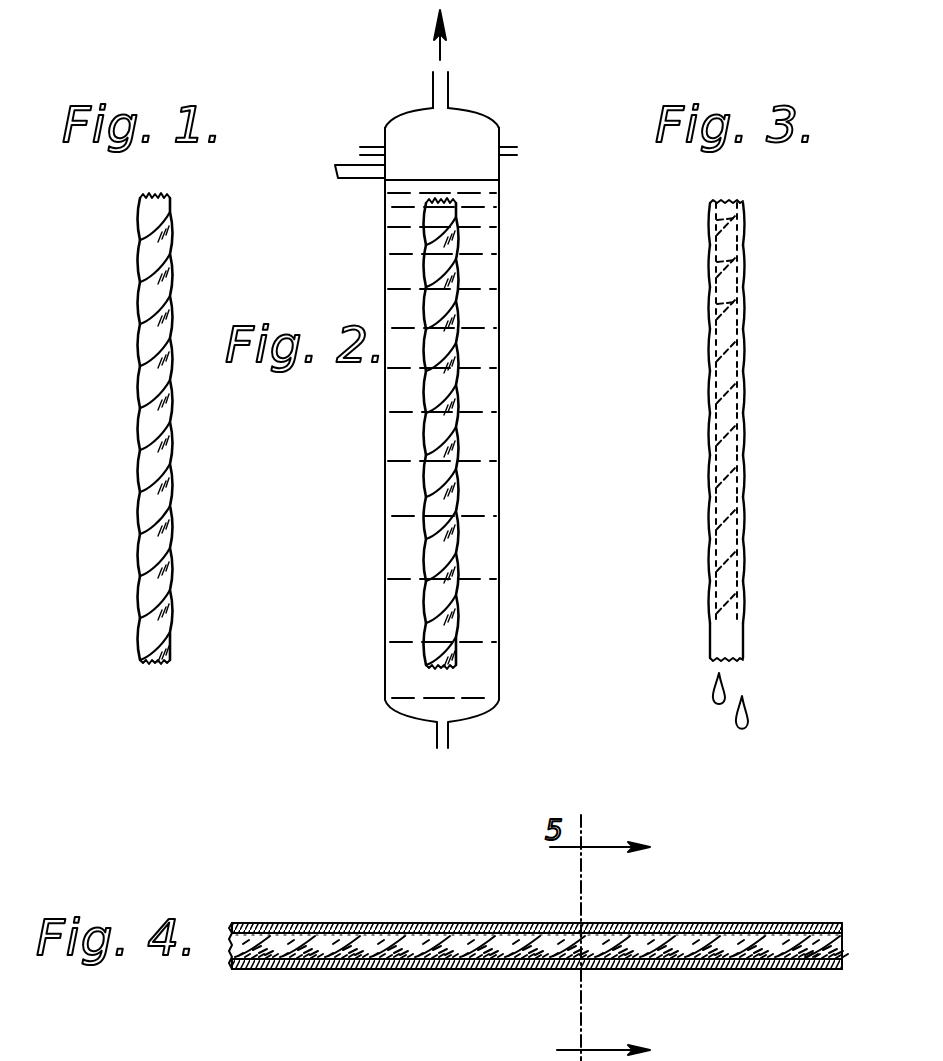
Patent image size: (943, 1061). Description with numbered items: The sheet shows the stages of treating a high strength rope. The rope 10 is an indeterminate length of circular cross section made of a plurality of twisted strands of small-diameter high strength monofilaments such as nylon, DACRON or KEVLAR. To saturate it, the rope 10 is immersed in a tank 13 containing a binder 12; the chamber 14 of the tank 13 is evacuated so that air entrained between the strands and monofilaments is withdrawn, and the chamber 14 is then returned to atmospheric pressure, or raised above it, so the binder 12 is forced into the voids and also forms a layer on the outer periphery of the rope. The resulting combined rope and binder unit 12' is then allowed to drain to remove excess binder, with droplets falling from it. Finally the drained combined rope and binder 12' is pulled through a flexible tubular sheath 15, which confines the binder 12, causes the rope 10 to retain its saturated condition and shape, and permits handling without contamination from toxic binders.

In FIG. 1, the rope 10 is at (135, 270).
In FIG. 2, the rope 10 is at (432, 505).
In FIG. 3, the rope 10 is at (727, 231).
In FIG. 4, the rope 10 is at (368, 963).
In FIG. 2, the binder 12 is at (479, 427).
In FIG. 3, the combined rope and binder unit 12' is at (771, 469).
In FIG. 4, the combined rope and binder unit 12' is at (537, 905).
In FIG. 2, the tank 13 is at (500, 242).
In FIG. 2, the chamber 14 is at (413, 128).
In FIG. 4, the tubular sheath 15 is at (359, 923).